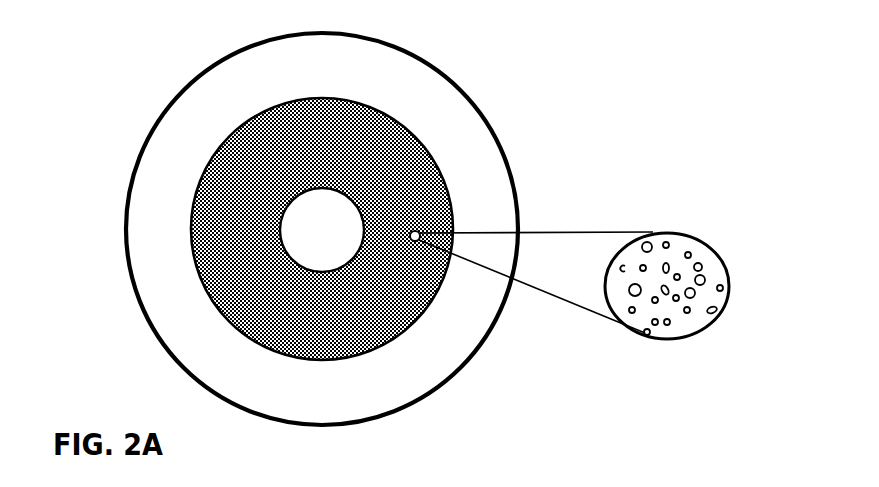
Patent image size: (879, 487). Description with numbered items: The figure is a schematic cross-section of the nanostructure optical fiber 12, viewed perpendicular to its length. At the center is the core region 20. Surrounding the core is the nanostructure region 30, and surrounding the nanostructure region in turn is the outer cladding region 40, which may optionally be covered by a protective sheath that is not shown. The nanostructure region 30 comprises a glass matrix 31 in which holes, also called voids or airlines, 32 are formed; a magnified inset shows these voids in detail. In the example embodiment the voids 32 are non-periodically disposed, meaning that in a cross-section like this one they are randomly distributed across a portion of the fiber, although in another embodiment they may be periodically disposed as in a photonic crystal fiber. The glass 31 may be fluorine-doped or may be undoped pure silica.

The nanostructure optical fiber 12 is at (150, 72).
The core region 20 is at (322, 228).
The nanostructure region 30 is at (390, 152).
The outer cladding region 40 is at (422, 98).
The glass matrix 31 is at (683, 243).
The voids 32 is at (693, 297).